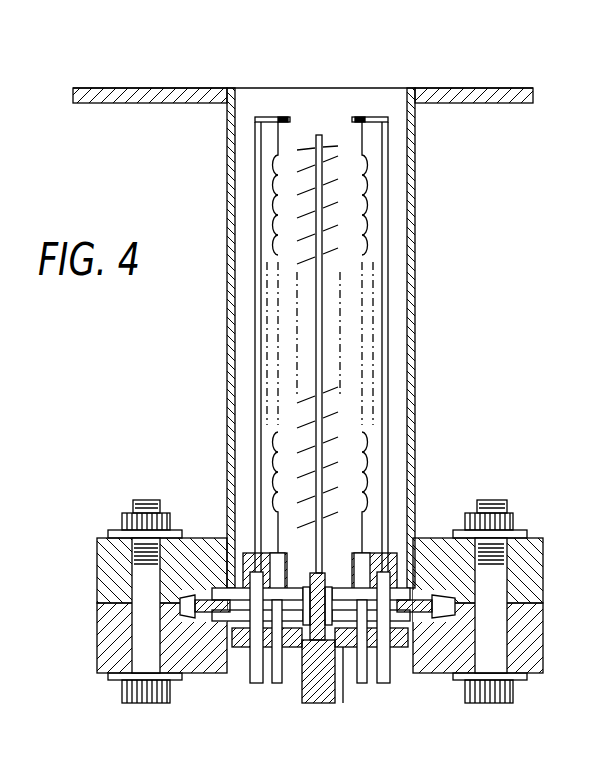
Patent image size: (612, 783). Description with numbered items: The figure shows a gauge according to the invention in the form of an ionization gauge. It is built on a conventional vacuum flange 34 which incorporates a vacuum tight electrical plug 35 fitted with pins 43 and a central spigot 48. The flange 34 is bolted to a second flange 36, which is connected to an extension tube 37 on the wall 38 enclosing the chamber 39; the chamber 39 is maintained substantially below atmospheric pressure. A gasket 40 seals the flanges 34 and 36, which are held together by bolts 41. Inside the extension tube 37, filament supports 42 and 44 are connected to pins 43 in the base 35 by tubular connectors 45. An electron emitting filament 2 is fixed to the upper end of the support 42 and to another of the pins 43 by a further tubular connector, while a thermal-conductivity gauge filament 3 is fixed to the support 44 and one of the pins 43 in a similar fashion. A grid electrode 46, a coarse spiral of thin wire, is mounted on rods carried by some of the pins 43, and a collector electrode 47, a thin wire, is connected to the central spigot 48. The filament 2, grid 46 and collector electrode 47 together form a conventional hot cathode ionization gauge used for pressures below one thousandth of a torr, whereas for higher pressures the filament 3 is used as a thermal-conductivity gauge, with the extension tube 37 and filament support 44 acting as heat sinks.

The chamber 39 is at (347, 64).
The wall 38 is at (452, 88).
The extension tube 37 is at (415, 152).
The filament support 44 is at (257, 194).
The filament support 42 is at (388, 226).
The thermal-conductivity gauge filament 3 is at (268, 446).
The electron emitting filament 2 is at (373, 257).
The grid electrode 46 is at (343, 385).
The collector electrode 47 is at (316, 307).
The second flange 36 is at (544, 540).
The vacuum flange 34 is at (536, 622).
The bolts 41 is at (136, 500).
The tubular connectors 45 is at (243, 553).
The vacuum tight electrical plug 35 is at (343, 704).
The central spigot 48 is at (318, 705).
The gasket 40 is at (442, 620).
The pins 43 is at (260, 685).